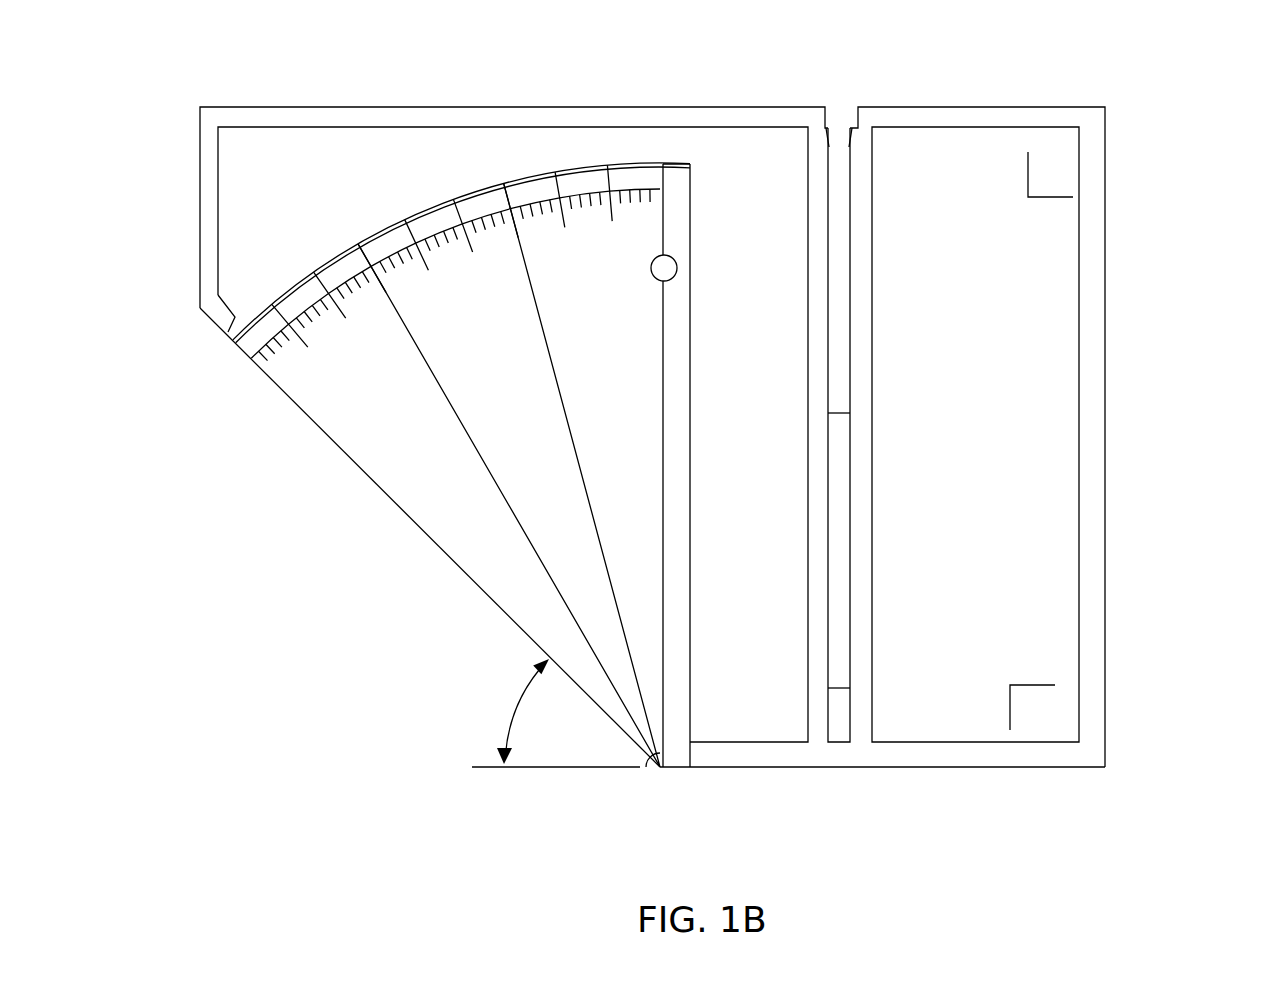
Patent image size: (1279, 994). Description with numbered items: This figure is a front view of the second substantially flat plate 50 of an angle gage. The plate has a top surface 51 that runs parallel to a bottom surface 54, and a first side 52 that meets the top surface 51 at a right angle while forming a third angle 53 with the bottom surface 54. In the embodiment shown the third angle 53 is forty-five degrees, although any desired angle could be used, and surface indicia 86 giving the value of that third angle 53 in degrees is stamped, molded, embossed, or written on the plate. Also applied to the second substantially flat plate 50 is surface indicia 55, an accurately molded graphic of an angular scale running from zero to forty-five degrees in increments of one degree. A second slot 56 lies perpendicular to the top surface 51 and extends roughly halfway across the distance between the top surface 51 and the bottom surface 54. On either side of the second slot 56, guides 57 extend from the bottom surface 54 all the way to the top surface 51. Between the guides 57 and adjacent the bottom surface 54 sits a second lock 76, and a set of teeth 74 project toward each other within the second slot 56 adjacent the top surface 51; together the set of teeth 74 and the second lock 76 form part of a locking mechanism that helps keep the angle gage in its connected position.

The second substantially flat plate 50 is at (708, 437).
The top surface 51 is at (513, 106).
The first side 52 is at (395, 508).
The third angle 53 is at (510, 707).
The bottom surface 54 is at (737, 768).
The surface indicia 55 is at (425, 465).
The second slot 56 is at (782, 448).
The guides 57 is at (823, 183).
The set of teeth 74 is at (832, 137).
The second lock 76 is at (837, 690).
The surface indicia 86 is at (290, 390).